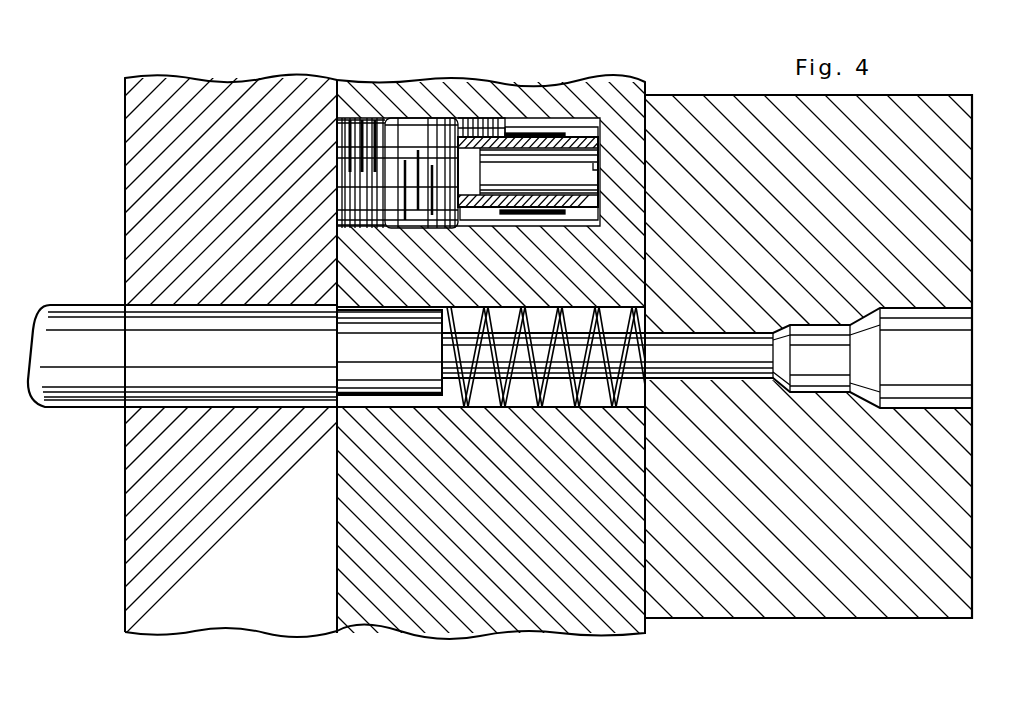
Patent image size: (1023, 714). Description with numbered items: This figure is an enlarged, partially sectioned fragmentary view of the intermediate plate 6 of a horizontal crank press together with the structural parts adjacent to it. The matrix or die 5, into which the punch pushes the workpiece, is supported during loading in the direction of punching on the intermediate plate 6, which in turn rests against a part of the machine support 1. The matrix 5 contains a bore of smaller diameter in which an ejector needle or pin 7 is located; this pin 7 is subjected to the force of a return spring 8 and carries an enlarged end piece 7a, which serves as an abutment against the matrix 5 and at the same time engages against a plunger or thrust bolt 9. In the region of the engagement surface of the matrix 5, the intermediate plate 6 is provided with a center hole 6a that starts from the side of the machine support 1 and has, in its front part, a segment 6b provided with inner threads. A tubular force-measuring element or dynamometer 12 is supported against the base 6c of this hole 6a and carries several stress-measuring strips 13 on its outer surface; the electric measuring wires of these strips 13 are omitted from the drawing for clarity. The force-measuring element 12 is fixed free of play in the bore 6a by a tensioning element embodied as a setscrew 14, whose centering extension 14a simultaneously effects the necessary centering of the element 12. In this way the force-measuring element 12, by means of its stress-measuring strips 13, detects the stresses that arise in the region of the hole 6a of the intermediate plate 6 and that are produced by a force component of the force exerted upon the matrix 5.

The machine support 1 is at (147, 512).
The matrix 5 is at (958, 237).
The intermediate plate 6 is at (535, 598).
The center hole 6a is at (598, 130).
The segment 6b is at (475, 148).
The base 6c is at (593, 165).
The ejector needle 7 is at (773, 360).
The enlarged end piece 7a is at (340, 347).
The return spring 8 is at (544, 395).
The thrust bolt 9 is at (68, 322).
The force-measuring element 12 is at (578, 190).
The stress-measuring strips 13 is at (550, 137).
The setscrew 14 is at (428, 138).
The centering extension 14a is at (472, 163).